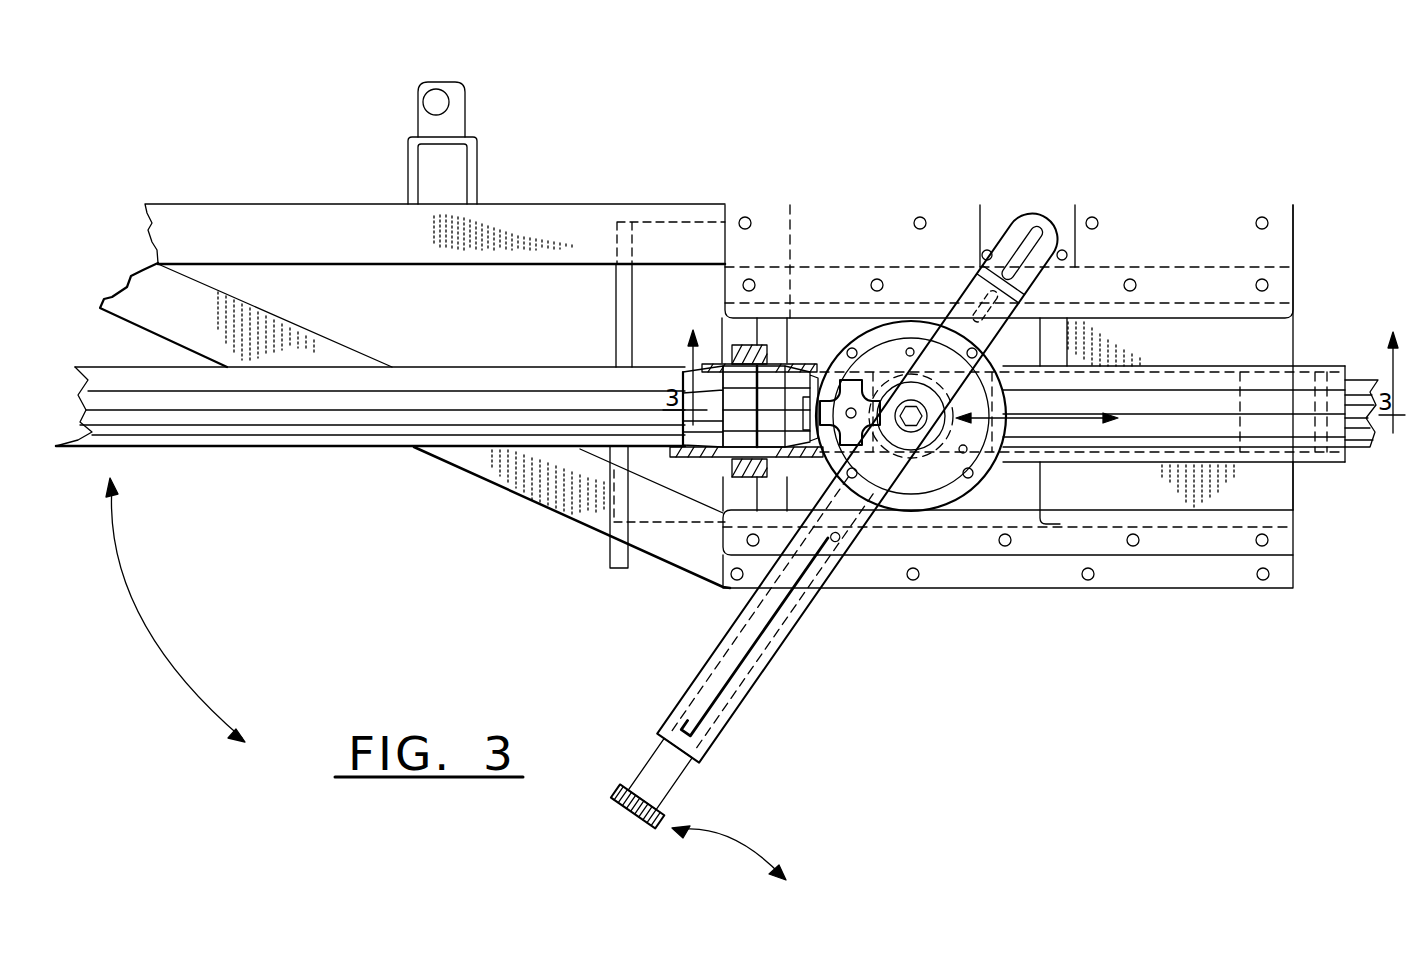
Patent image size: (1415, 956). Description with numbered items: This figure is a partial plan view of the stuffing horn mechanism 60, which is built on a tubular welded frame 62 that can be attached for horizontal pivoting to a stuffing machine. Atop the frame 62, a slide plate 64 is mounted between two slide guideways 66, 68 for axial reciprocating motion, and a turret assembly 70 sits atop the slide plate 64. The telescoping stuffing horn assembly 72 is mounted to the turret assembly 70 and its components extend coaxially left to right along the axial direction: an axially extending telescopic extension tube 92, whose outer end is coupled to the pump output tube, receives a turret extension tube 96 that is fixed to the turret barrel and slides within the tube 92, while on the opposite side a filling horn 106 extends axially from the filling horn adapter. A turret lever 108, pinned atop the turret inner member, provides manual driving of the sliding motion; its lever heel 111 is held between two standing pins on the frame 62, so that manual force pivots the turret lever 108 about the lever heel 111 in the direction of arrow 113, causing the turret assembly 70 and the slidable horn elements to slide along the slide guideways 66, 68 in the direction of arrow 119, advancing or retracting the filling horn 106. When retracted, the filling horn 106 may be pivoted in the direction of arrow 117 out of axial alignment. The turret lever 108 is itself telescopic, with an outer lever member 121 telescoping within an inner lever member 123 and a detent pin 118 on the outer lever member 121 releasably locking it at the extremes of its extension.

The stuffing horn mechanism 60 is at (458, 505).
The tubular welded frame 62 is at (563, 206).
The slide plate 64 is at (813, 337).
The slide guideway 66 is at (766, 292).
The slide guideway 68 is at (1023, 425).
The turret assembly 70 is at (935, 512).
The telescoping stuffing horn assembly 72 is at (1195, 462).
The telescopic extension tube 92 is at (1360, 374).
The turret extension tube 96 is at (1177, 362).
The filling horn 106 is at (282, 418).
The turret lever 108 is at (714, 662).
The lever heel 111 is at (1048, 242).
The arrow 113 is at (745, 838).
The arrow 117 is at (143, 615).
The detent pin 118 is at (835, 545).
The arrow 119 is at (1057, 543).
The outer lever member 121 is at (667, 772).
The inner lever member 123 is at (868, 545).